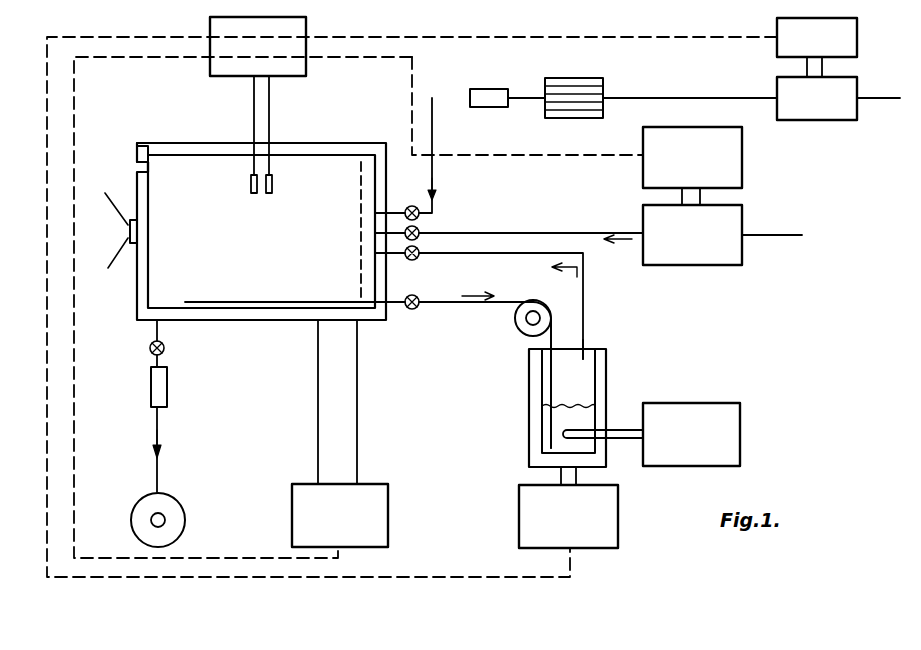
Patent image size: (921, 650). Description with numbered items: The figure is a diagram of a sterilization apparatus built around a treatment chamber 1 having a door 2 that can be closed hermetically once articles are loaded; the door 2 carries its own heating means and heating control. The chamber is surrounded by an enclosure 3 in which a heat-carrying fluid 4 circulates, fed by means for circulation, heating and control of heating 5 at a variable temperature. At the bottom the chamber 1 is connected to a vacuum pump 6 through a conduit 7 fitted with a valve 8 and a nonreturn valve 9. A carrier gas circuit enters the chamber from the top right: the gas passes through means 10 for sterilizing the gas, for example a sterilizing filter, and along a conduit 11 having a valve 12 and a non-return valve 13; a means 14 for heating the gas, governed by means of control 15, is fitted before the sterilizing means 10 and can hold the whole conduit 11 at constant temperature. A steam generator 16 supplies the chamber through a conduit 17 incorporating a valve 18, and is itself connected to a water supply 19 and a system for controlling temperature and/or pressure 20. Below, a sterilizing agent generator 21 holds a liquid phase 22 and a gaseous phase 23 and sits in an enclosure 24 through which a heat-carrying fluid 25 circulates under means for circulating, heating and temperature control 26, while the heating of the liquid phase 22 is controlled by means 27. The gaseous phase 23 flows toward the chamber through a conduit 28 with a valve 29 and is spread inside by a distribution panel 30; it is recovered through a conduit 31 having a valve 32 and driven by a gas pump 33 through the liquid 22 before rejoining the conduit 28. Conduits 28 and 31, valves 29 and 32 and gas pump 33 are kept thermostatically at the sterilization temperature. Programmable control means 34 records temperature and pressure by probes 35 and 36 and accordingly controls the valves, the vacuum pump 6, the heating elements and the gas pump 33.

The treatment chamber 1 is at (162, 288).
The door 2 is at (137, 275).
The enclosure 3 is at (137, 152).
The heat-carrying fluid 4 is at (149, 152).
The means for circulation, heating and control of heating 5 is at (372, 522).
The vacuum pump 6 is at (178, 518).
The conduit 7 is at (160, 330).
The valve 8 is at (165, 350).
The nonreturn valve 9 is at (168, 390).
The means for sterilizing a gas 10 is at (603, 80).
The conduit 11 is at (432, 134).
The valve 12 is at (420, 217).
The non-return valve 13 is at (488, 96).
The means for heating the gas 14 is at (845, 92).
The means of control 15 is at (857, 44).
The steam generator 16 is at (730, 218).
The conduit 17 is at (538, 232).
The valve 18 is at (420, 238).
The water supply 19 is at (782, 234).
The system for controlling the temperature and/or pressure 20 is at (734, 162).
The sterilizing agent generator 21 is at (595, 396).
The liquid phase 22 is at (588, 418).
The gaseous phase 23 is at (583, 378).
The enclosure 24 is at (597, 352).
The heat-carrying fluid 25 is at (542, 459).
The means for circulating, heating and temperature control 26 is at (608, 524).
The means for controlling heating and temperature of the liquid phase 27 is at (728, 442).
The conduit 28 is at (583, 287).
The valve 29 is at (420, 258).
The distribution panel 30 is at (361, 236).
The conduit 31 is at (210, 300).
The valve 32 is at (420, 308).
The gas pump 33 is at (518, 330).
The programmable control means 34 is at (296, 70).
The probe 35 is at (250, 186).
The probe 36 is at (275, 186).